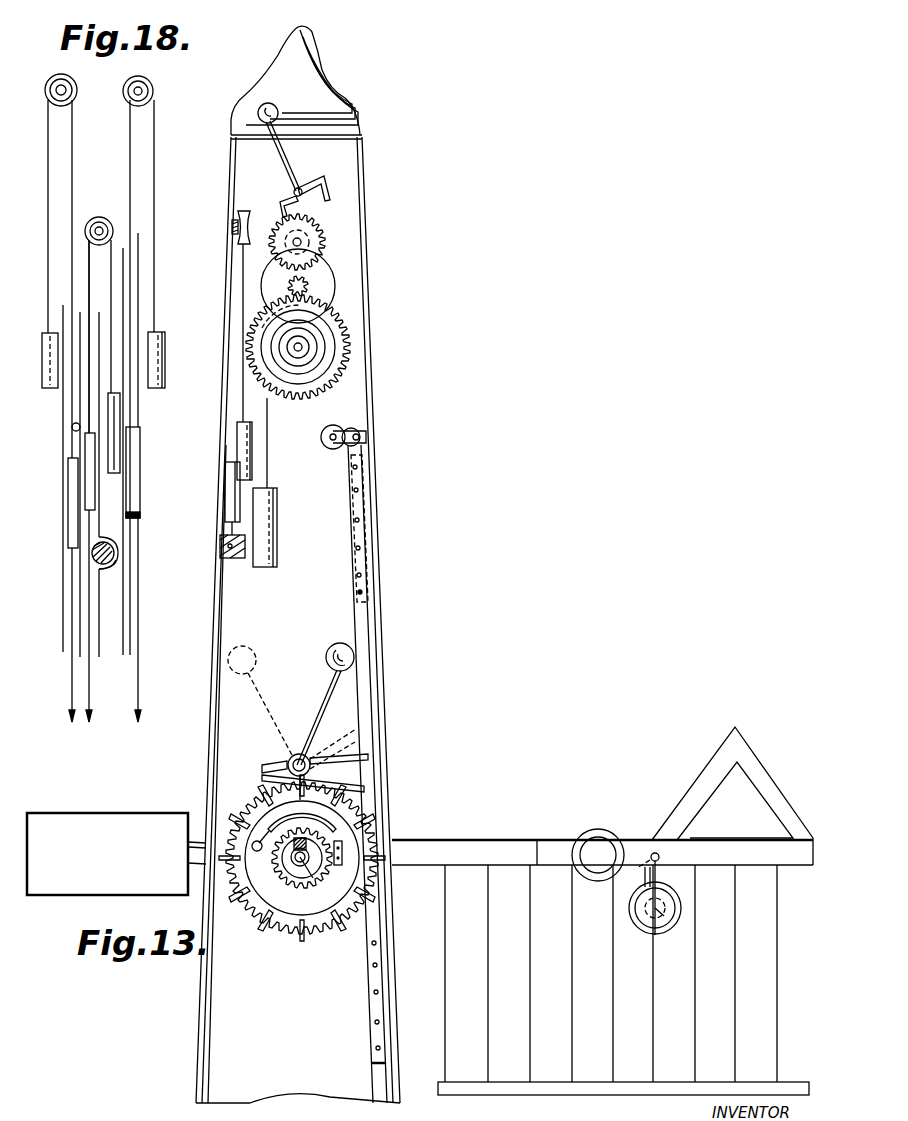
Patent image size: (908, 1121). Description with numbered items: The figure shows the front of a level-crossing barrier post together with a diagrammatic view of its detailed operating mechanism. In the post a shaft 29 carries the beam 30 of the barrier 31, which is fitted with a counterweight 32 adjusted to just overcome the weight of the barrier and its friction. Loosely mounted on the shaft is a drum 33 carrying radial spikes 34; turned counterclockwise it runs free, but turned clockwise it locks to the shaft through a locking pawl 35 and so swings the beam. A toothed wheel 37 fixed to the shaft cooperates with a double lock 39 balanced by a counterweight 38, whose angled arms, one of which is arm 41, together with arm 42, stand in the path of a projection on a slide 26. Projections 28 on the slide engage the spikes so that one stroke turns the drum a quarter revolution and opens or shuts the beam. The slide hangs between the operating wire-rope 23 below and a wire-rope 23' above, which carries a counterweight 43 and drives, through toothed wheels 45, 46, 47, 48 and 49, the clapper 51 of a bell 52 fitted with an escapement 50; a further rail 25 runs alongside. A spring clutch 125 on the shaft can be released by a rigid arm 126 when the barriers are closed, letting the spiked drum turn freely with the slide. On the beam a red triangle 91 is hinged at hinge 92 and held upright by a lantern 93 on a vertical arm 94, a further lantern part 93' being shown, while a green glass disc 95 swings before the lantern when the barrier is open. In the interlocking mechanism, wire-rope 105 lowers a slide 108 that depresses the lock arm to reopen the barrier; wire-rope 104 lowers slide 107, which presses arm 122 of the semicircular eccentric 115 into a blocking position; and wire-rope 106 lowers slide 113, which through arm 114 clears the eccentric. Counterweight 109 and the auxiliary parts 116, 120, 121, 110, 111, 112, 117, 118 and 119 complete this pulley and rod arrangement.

In FIG. 18, the pulley 117 is at (50, 83).
In FIG. 18, the pulley 118 is at (145, 84).
In FIG. 18, the pulley 119 is at (107, 210).
In FIG. 13, the pulley 119 is at (243, 211).
In FIG. 18, the counterweight 109 is at (42, 357).
In FIG. 18, the weight 116 is at (166, 352).
In FIG. 18, the rod 120 is at (125, 417).
In FIG. 18, the cord 121 is at (88, 415).
In FIG. 18, the hook 110 is at (72, 430).
In FIG. 18, the cord 111 is at (88, 429).
In FIG. 18, the slide 108 is at (90, 476).
In FIG. 13, the slide 108 is at (222, 480).
In FIG. 18, the slide 107 is at (75, 496).
In FIG. 18, the rod 112 is at (123, 446).
In FIG. 13, the rod 112 is at (253, 423).
In FIG. 18, the slide 113 is at (134, 508).
In FIG. 18, the arm 114 is at (114, 553).
In FIG. 13, the arm 114 is at (222, 541).
In FIG. 18, the semicircular cylindrical eccentric 115 is at (110, 566).
In FIG. 13, the semicircular cylindrical eccentric 115 is at (229, 560).
In FIG. 18, the arm 122 is at (92, 558).
In FIG. 18, the wire-rope 104 is at (65, 650).
In FIG. 18, the wire-rope 105 is at (92, 728).
In FIG. 13, the wire-rope 105 is at (218, 703).
In FIG. 18, the wire-rope 106 is at (137, 635).
In FIG. 13, the bell 52 is at (322, 100).
In FIG. 13, the clapper 51 is at (275, 108).
In FIG. 13, the escapement 50 is at (314, 186).
In FIG. 13, the toothed wheel 48 is at (320, 226).
In FIG. 13, the toothed wheel 49 is at (320, 242).
In FIG. 13, the toothed wheel 46 is at (288, 284).
In FIG. 13, the toothed wheel 47 is at (323, 283).
In FIG. 13, the toothed wheel 45 is at (320, 322).
In FIG. 13, the wire-rope 23' is at (305, 443).
In FIG. 13, the operating wire-rope 23 is at (354, 764).
In FIG. 13, the slide 26 is at (357, 497).
In FIG. 13, the rail 25 is at (373, 543).
In FIG. 13, the projections 28 is at (360, 577).
In FIG. 13, the counterweight 43 is at (278, 535).
In FIG. 13, the counterweight 38 is at (355, 656).
In FIG. 13, the arm 42 is at (367, 756).
In FIG. 13, the arm 41 is at (362, 778).
In FIG. 13, the double lock 39 is at (263, 776).
In FIG. 13, the drum 33 is at (297, 898).
In FIG. 13, the spikes 34 is at (327, 930).
In FIG. 13, the shaft 29 is at (308, 865).
In FIG. 13, the locking pawl 35 is at (292, 846).
In FIG. 13, the toothed wheel 37 is at (263, 911).
In FIG. 13, the spring clutch 125 is at (307, 847).
In FIG. 13, the rigid arm 126 is at (313, 828).
In FIG. 13, the counterweight 32 is at (116, 854).
In FIG. 13, the beam 30 is at (452, 852).
In FIG. 13, the barrier 31 is at (776, 1012).
In FIG. 13, the red triangle 91 is at (700, 790).
In FIG. 13, the hinge 92 is at (662, 856).
In FIG. 13, the lantern 93 is at (678, 908).
In FIG. 13, the roller shaft 93' is at (673, 940).
In FIG. 13, the vertical arm 94 is at (647, 873).
In FIG. 13, the green glass disc 95 is at (594, 852).